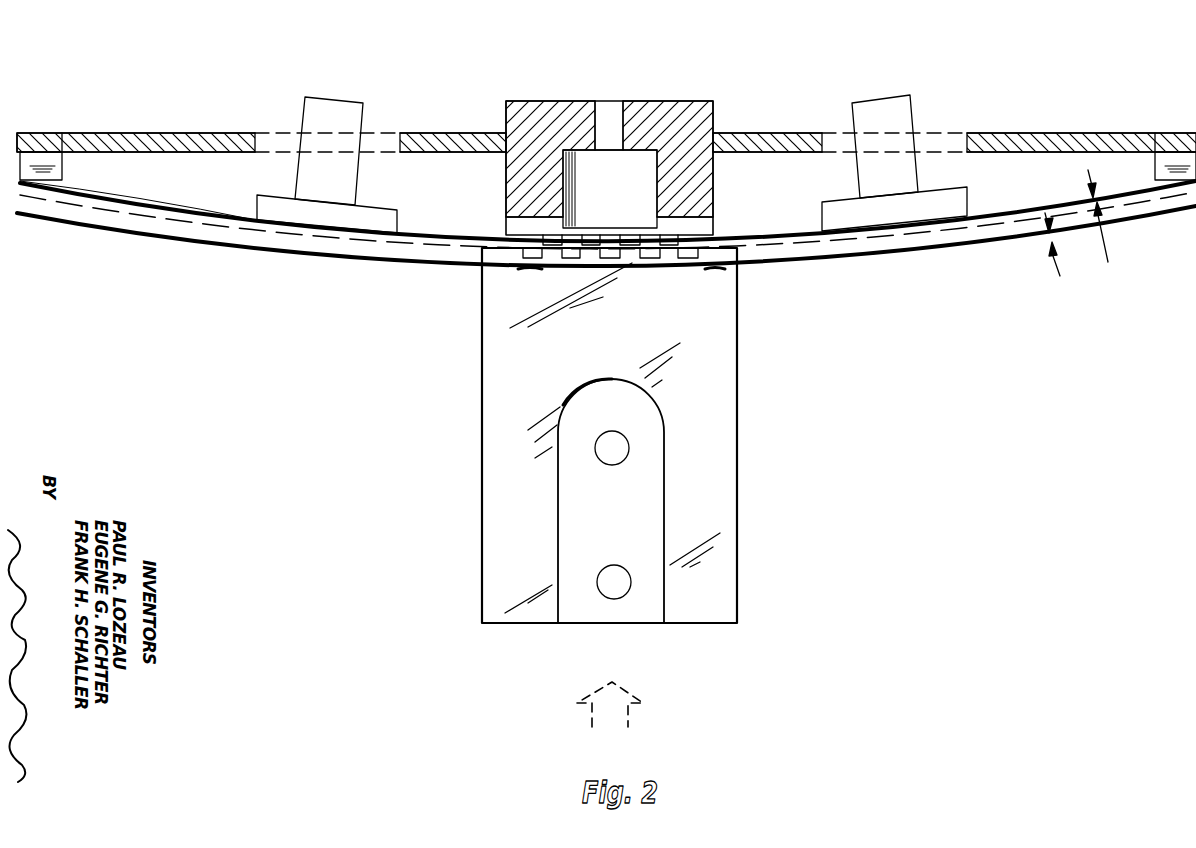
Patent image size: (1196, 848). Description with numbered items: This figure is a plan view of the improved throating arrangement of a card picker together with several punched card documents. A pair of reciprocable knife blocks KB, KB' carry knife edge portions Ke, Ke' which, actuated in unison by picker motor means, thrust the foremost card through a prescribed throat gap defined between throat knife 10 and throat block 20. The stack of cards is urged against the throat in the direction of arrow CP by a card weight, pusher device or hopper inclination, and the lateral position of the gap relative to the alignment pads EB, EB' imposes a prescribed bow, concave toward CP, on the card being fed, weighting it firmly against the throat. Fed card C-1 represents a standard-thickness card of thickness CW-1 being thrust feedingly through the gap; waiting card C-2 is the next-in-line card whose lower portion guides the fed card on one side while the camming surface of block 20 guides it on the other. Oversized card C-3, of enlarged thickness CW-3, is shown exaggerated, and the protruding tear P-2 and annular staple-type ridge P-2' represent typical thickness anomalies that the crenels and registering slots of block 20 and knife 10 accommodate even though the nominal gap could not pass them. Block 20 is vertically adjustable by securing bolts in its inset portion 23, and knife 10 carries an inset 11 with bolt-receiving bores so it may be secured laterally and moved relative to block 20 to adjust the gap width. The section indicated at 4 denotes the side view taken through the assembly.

The alignment pad EB is at (72, 161).
The alignment pad EB' is at (1148, 158).
The fed card C-1 is at (152, 205).
The waiting card C-2 is at (900, 240).
The oversized card C-3 is at (230, 250).
The knife block KB is at (358, 151).
The knife block KB' is at (855, 148).
The knife edge portion Ke is at (303, 211).
The knife edge portion Ke' is at (922, 208).
The throat block 20 is at (718, 172).
The inset portion 23 is at (582, 152).
The section line 4- 4 is at (571, 96).
The throating knife 10 is at (742, 367).
The inset 11 is at (620, 516).
The tear P-2 is at (684, 292).
The staple-type ridge P-2' is at (556, 310).
The card thickness CW-1 is at (1110, 250).
The card thickness CW-3 is at (1062, 277).
The card thrust CP is at (628, 718).